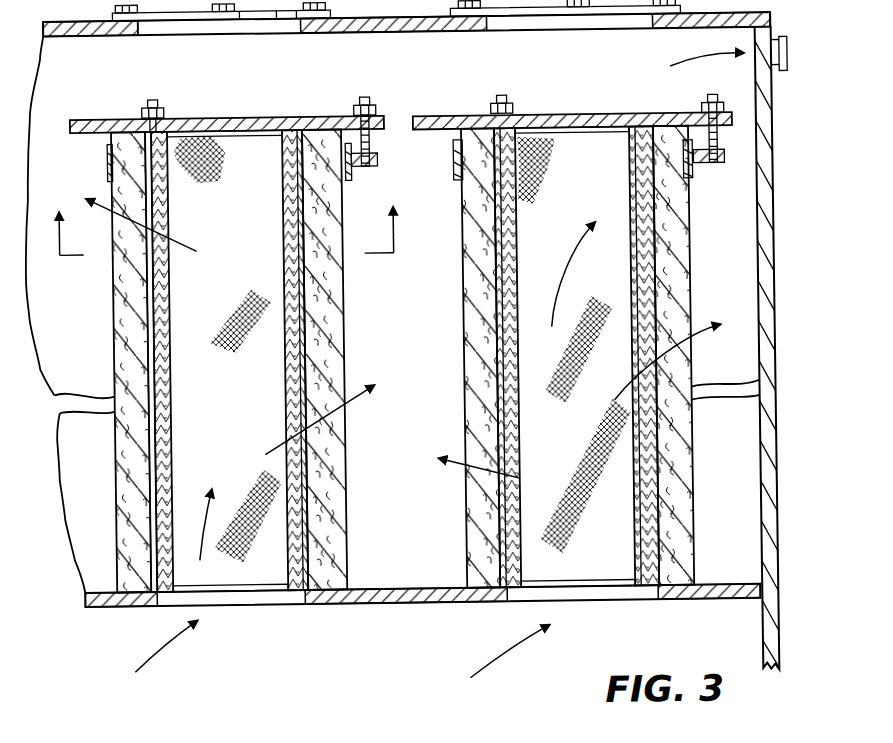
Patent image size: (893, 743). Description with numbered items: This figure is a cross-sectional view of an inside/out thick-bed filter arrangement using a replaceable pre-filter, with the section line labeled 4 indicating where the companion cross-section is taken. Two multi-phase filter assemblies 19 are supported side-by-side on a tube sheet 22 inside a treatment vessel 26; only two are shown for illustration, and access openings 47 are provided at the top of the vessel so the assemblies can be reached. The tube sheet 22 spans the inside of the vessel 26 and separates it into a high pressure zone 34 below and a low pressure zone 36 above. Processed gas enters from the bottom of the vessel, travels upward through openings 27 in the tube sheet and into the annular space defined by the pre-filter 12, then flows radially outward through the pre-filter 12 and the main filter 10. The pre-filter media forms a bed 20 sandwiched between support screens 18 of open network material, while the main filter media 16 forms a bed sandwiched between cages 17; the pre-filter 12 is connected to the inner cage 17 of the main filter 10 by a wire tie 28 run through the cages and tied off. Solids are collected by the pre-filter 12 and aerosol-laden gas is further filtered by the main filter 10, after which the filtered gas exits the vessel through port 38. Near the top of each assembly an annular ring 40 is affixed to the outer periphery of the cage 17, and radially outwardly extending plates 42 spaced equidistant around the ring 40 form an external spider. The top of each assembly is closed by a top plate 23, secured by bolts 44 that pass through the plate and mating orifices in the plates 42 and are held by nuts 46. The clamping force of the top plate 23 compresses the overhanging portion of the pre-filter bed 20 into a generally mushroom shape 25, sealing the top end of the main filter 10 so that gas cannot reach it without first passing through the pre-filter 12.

The section line 4- 4 is at (227, 252).
The main filter 10 is at (229, 335).
The pre-filter 12 is at (256, 335).
The main filter media 16 is at (324, 493).
The cage 17 is at (308, 455).
The support screen 18 is at (172, 410).
The multi-phase filter assembly 19 is at (113, 94).
The pre-filter bed 20 is at (164, 303).
The tube sheet 22 is at (420, 602).
The top plate 23 is at (239, 121).
The mushroom shape 25 is at (299, 124).
The treatment vessel 26 is at (767, 681).
The opening 27 is at (278, 596).
The wire tie 28 is at (180, 152).
The high pressure zone 34 is at (709, 608).
The low pressure zone 36 is at (726, 452).
The port 38 is at (773, 64).
The annular ring 40 is at (108, 158).
The plate 42 is at (356, 170).
The bolt 44 is at (160, 96).
The nut 46 is at (512, 100).
The access opening 47 is at (293, 23).